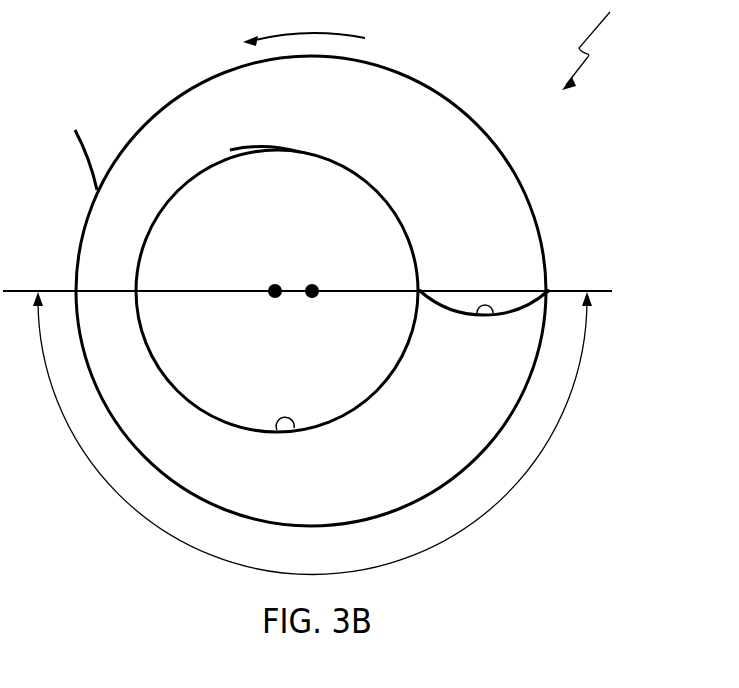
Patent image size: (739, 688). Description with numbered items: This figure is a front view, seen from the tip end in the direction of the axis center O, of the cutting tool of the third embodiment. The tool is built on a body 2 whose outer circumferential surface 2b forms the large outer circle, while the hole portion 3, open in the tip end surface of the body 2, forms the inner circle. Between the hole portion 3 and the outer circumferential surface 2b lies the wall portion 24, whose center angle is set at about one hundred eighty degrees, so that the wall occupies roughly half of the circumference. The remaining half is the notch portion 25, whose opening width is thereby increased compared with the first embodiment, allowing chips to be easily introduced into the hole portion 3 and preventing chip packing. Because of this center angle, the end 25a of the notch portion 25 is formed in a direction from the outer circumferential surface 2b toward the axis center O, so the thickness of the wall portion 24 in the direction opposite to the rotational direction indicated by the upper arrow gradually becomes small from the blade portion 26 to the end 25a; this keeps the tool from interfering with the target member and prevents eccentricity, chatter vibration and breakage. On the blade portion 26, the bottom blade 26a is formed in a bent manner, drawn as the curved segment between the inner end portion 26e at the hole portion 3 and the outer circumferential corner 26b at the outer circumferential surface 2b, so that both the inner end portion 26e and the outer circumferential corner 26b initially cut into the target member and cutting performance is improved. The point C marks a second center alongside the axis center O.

The body 2 is at (417, 66).
The outer circumferential surface 2b is at (97, 190).
The hole portion 3 is at (294, 428).
The wall portion 24 is at (190, 416).
The notch portion 25 is at (227, 147).
The end of notch portion 25a is at (92, 290).
The blade portion 26 is at (480, 282).
The bottom blade 26a is at (493, 313).
The outer circumferential corner 26b is at (548, 290).
The inner end portion 26e is at (420, 291).
The center of inner circle C is at (280, 285).
The axis center O is at (316, 285).